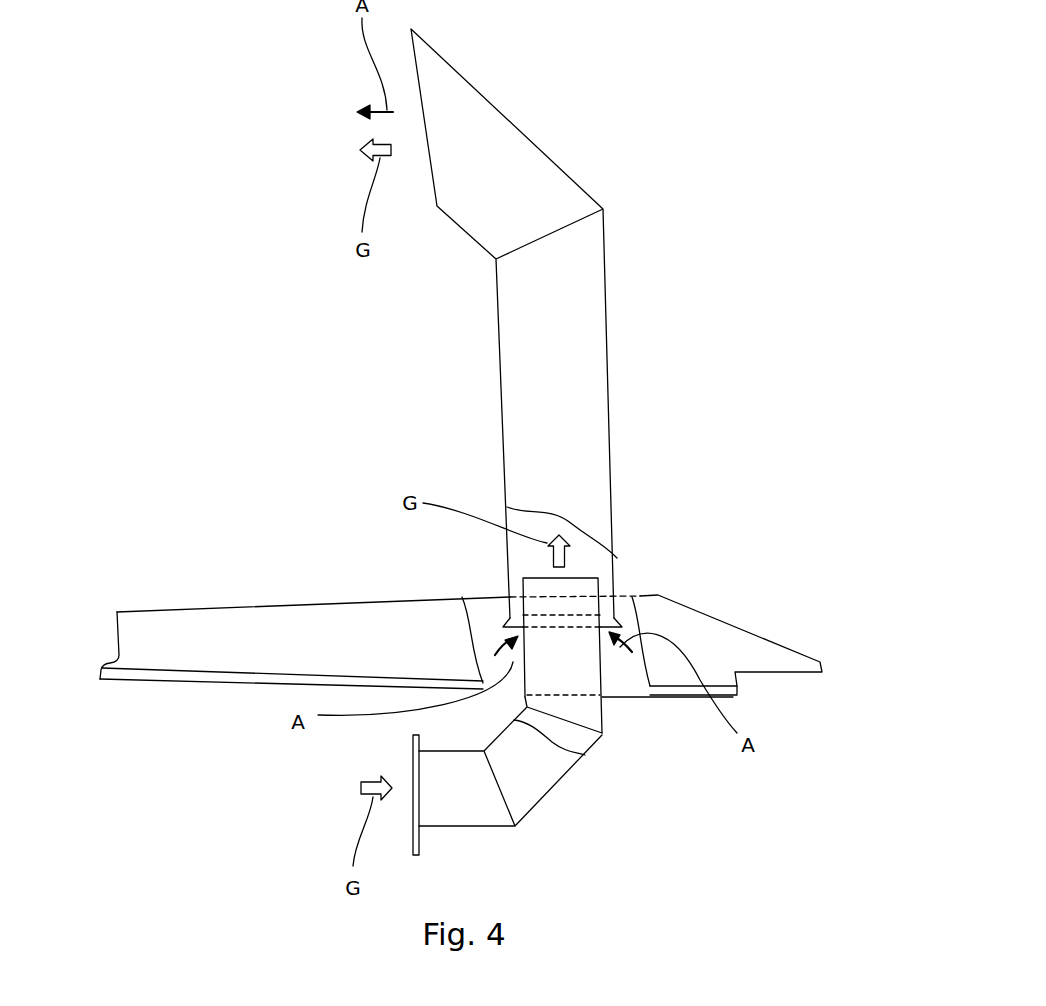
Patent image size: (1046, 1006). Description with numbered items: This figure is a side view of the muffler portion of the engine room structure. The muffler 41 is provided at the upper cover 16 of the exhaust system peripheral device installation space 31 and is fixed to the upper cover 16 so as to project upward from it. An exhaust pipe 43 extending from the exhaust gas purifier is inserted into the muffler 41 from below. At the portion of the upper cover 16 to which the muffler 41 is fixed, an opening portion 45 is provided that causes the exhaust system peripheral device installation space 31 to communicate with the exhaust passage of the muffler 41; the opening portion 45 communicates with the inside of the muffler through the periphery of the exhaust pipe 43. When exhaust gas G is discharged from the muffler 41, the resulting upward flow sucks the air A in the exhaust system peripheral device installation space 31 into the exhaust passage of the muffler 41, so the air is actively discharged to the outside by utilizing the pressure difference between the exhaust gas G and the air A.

The muffler 41 is at (587, 395).
The upper cover 16 is at (353, 612).
The opening portion 45 is at (605, 607).
The exhaust pipe 43 is at (535, 775).
The exhaust system peripheral device installation space 31 is at (227, 806).